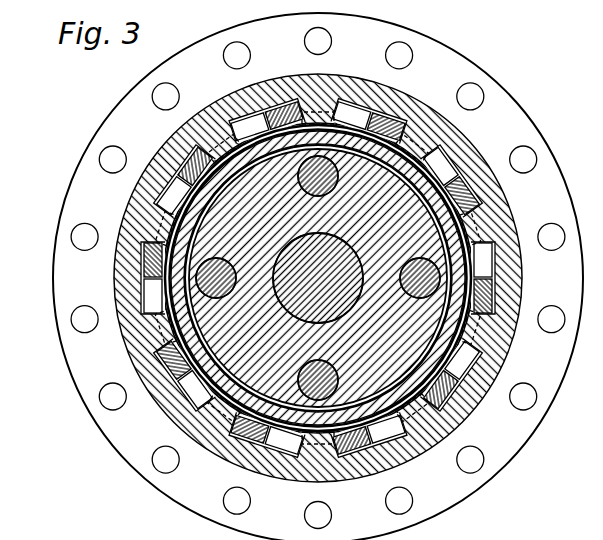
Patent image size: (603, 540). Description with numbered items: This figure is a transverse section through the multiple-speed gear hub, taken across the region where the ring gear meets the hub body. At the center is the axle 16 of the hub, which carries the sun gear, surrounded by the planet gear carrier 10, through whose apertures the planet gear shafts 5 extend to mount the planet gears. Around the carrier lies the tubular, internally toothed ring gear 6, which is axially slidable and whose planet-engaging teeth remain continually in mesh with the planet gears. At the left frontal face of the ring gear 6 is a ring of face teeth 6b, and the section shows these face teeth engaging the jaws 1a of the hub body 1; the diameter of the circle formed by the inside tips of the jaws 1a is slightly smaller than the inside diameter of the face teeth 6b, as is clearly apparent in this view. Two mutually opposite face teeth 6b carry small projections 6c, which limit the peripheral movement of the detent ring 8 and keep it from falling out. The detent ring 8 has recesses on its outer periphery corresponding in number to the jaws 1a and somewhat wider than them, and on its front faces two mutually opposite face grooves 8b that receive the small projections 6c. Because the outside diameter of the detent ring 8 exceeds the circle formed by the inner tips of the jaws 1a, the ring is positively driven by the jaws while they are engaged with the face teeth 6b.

The hub body 1 is at (158, 148).
The jaws 1a is at (418, 143).
The planet gear shafts 5 is at (296, 432).
The ring gear 6 is at (452, 173).
The face teeth 6b is at (278, 106).
The small projections 6c is at (168, 262).
The detent ring 8 is at (423, 174).
The face grooves 8b is at (488, 268).
The planet gear carrier 10 is at (441, 366).
The axle 16 is at (293, 297).